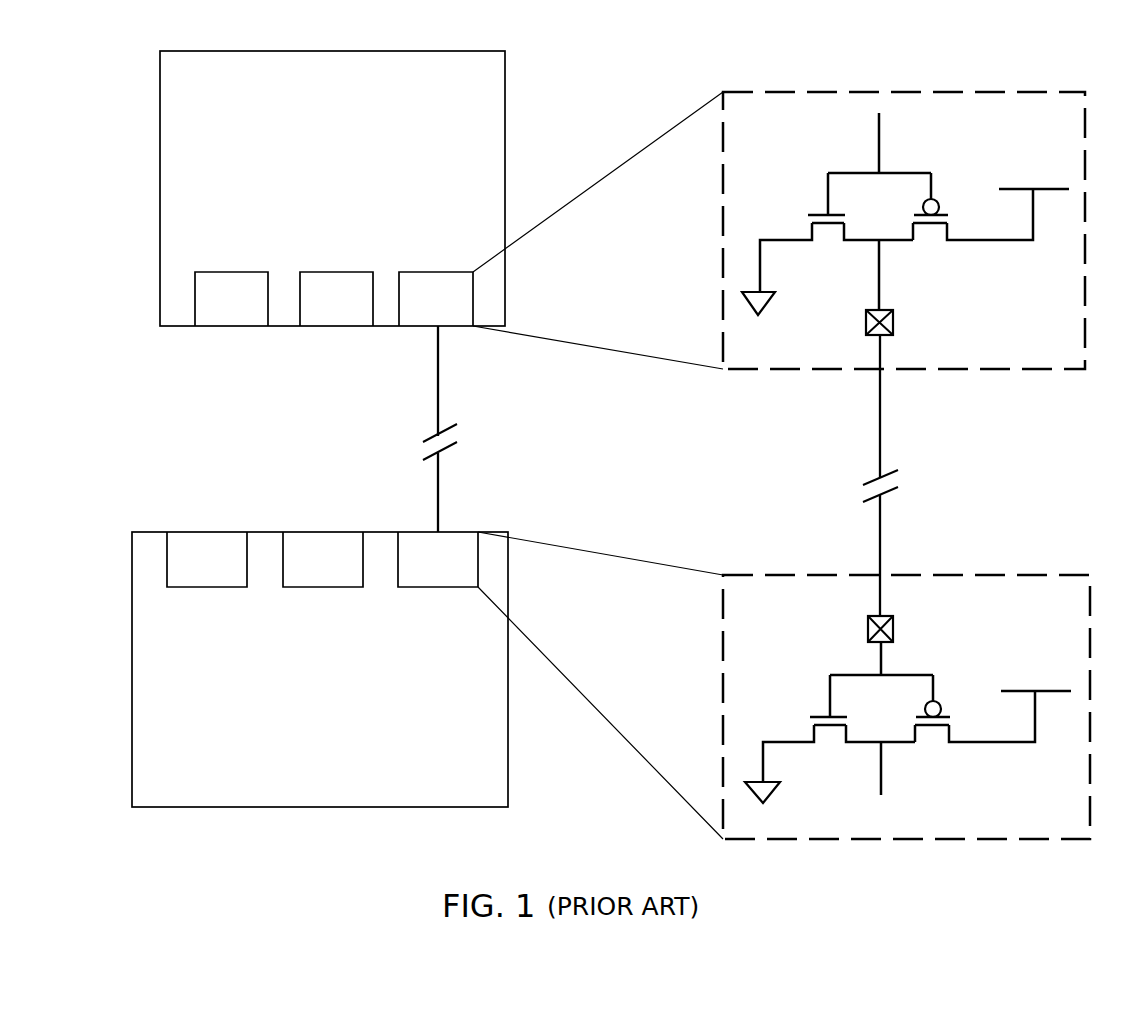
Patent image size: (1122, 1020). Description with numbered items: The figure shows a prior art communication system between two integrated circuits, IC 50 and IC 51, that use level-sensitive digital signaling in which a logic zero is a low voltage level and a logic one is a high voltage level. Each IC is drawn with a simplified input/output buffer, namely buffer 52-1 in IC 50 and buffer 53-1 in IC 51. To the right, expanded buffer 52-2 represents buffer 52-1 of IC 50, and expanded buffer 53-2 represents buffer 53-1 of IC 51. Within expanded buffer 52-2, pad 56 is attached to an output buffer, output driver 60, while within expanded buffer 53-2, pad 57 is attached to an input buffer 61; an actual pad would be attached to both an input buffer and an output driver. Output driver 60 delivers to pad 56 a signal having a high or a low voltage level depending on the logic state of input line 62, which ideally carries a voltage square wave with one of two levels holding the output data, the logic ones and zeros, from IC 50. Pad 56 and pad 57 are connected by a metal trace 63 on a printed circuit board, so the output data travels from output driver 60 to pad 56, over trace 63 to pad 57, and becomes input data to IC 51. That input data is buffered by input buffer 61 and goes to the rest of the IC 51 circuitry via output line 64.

The IC 50 is at (151, 98).
The IC 51 is at (124, 551).
The buffer 52-1 is at (435, 270).
The expanded buffer 52-2 is at (967, 370).
The buffer 53-1 is at (435, 588).
The expanded buffer 53-2 is at (967, 575).
The pad 56 is at (893, 326).
The pad 57 is at (893, 632).
The output driver 60 is at (990, 281).
The input buffer 61 is at (805, 678).
The input line 62 is at (879, 155).
The metal trace 63 is at (438, 400).
The output line 64 is at (881, 788).